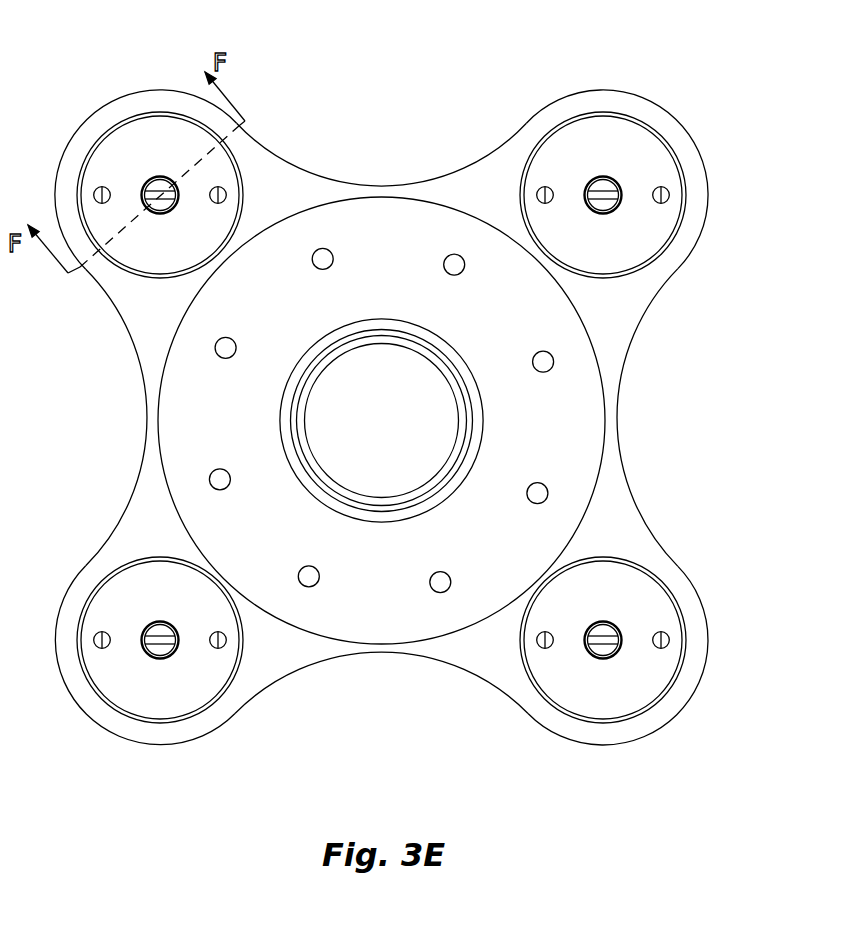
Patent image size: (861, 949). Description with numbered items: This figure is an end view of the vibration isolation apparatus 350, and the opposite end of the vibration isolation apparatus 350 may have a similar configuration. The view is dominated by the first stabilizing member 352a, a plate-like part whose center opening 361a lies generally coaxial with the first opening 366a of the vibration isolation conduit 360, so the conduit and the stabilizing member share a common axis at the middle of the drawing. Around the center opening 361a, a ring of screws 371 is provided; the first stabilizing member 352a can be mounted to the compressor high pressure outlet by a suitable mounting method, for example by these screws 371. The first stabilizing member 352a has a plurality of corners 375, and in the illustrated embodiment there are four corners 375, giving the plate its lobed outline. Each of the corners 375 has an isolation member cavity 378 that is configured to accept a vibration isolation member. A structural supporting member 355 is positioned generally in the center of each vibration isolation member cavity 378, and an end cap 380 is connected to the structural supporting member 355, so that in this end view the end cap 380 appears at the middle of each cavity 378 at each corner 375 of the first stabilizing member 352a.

The vibration isolation apparatus 350 is at (420, 422).
The first stabilizing member 352a is at (698, 148).
The structural supporting member 355 is at (608, 200).
The vibration isolation conduit 360 is at (354, 502).
The center opening 361a is at (390, 319).
The first opening 366a is at (401, 480).
The screws 371 is at (323, 259).
The corners 375 is at (138, 105).
The isolation member cavity 378 is at (163, 114).
The end cap 380 is at (633, 243).